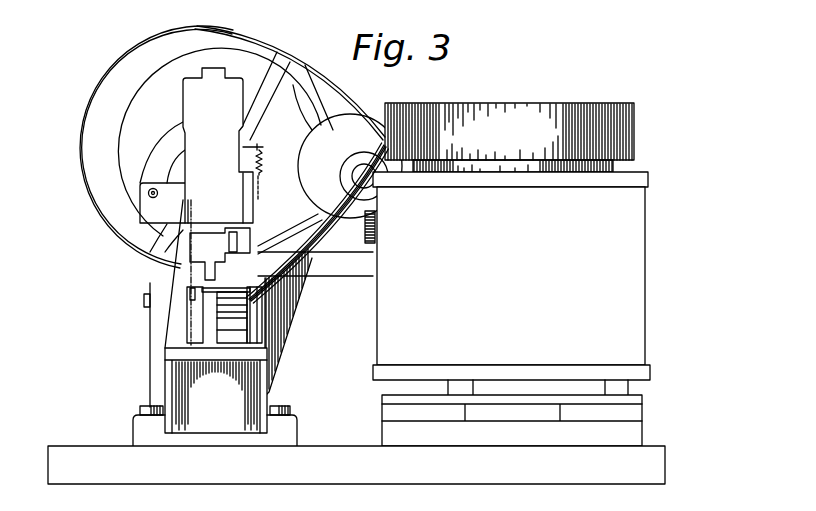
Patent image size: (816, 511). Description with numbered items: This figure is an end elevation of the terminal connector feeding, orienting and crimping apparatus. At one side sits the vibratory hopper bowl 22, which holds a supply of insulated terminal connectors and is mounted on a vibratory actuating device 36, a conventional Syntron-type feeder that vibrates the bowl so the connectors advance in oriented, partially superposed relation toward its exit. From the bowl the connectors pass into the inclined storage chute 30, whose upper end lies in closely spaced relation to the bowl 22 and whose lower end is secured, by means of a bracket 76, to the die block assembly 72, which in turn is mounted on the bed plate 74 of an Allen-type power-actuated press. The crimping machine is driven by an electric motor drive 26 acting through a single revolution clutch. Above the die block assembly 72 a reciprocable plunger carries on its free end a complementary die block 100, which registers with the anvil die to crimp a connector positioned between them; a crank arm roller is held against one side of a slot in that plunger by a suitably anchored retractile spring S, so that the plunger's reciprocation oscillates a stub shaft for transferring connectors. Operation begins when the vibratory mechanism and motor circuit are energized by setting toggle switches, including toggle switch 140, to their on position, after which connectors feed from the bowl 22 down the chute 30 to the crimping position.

The vibratory hopper bowl 22 is at (625, 140).
The electric motor drive 26 is at (353, 152).
The retractile spring S is at (263, 160).
The inclined storage chute 30 is at (322, 247).
The vibratory actuating device 36 is at (520, 273).
The die block assembly 72 is at (217, 338).
The bed plate 74 is at (226, 417).
The bracket 76 is at (278, 343).
The complementary die block 100 is at (207, 275).
The toggle switch 140 is at (147, 298).